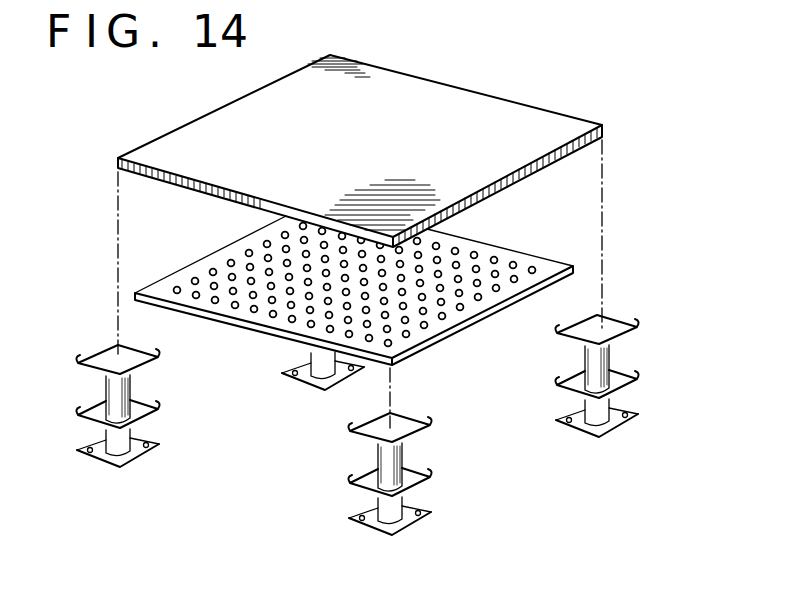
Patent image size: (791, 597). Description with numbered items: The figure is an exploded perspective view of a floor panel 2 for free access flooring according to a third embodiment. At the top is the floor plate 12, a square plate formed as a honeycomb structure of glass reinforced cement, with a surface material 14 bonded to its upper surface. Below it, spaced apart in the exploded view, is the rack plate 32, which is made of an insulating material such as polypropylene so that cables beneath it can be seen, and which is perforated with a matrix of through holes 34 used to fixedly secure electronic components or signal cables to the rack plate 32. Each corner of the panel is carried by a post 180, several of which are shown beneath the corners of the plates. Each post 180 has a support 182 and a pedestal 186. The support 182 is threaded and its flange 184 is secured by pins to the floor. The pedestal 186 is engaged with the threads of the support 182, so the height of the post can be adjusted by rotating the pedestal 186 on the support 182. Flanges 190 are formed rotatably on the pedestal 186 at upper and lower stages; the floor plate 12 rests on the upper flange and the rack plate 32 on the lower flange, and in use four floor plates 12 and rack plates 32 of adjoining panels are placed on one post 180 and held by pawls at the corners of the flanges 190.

The floor panel 2 is at (604, 142).
The floor plate 12 is at (540, 168).
The surface material 14 is at (463, 108).
The rack plate 32 is at (452, 338).
The through holes 34 is at (513, 265).
The post 180 is at (635, 340).
The support 182 is at (585, 448).
The flange 184 is at (607, 445).
The pedestal 186 is at (647, 374).
The flanges 190 is at (632, 326).